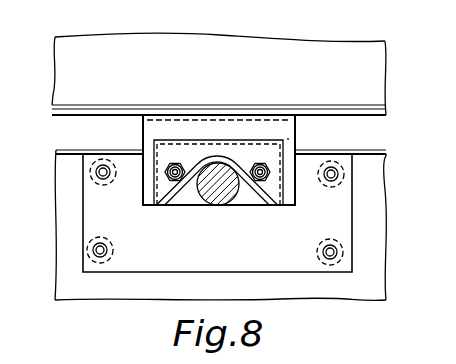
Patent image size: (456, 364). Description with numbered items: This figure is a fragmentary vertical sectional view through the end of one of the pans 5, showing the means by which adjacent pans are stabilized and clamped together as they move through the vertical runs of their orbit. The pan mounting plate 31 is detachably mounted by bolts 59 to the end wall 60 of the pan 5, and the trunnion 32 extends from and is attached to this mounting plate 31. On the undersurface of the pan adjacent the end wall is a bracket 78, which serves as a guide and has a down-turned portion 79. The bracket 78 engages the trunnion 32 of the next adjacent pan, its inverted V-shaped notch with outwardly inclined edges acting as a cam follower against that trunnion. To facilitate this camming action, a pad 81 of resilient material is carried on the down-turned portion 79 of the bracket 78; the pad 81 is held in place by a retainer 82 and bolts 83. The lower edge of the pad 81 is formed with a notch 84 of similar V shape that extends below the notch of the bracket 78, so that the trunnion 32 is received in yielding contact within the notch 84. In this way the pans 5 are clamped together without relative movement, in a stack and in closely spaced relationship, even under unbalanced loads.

The end wall 60 is at (116, 55).
The pan 5 is at (346, 47).
The pan mounting plate 31 is at (247, 256).
The bolts 59 is at (88, 181).
The bracket 78 is at (197, 129).
The retainer 82 is at (160, 147).
The down-turned portion 79 is at (288, 138).
The bolts 83 is at (167, 175).
The pad 81 is at (262, 191).
The notch 84 is at (248, 186).
The trunnion 32 is at (209, 186).